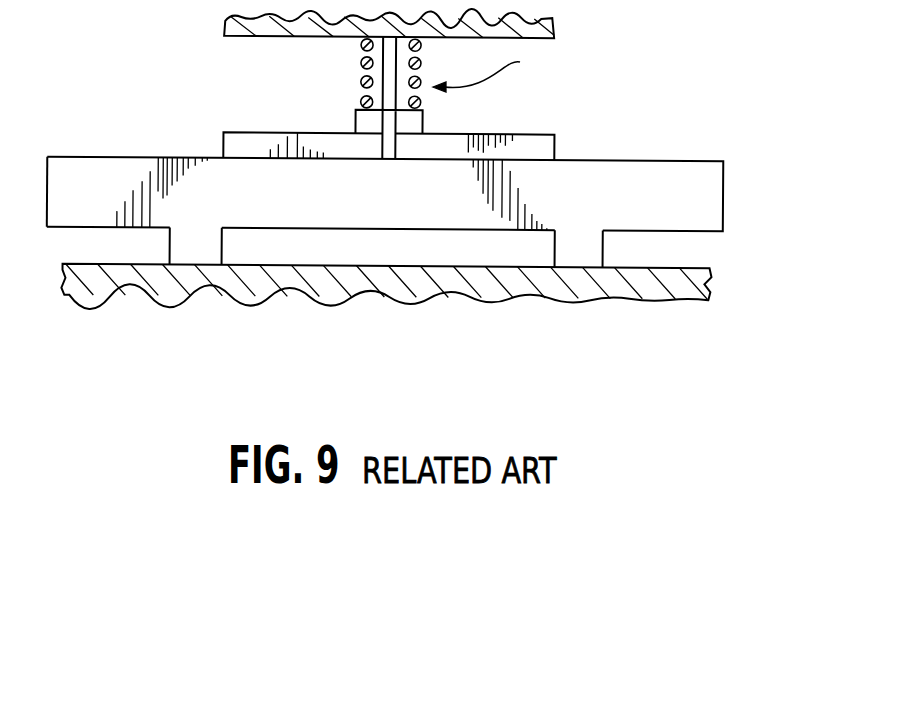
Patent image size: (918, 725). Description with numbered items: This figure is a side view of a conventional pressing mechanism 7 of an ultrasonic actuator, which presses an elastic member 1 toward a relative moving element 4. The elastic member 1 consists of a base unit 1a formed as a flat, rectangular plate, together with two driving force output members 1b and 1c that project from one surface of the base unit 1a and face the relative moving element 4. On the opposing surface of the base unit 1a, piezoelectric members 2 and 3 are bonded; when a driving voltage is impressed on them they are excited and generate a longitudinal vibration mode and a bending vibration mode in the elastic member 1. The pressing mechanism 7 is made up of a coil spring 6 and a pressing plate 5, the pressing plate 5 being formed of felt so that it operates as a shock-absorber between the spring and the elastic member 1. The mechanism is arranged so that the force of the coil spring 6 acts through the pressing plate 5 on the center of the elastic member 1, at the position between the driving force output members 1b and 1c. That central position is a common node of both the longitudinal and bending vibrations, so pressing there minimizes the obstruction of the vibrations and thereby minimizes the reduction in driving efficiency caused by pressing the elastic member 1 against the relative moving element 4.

The elastic member 1 is at (708, 190).
The base unit 1a is at (92, 172).
The driving force output member 1b is at (197, 243).
The driving force output member 1c is at (583, 243).
The piezoelectric member 2 is at (252, 147).
The piezoelectric member 3 is at (527, 143).
The relative moving element 4 is at (700, 288).
The pressing plate 5 is at (412, 118).
The coil spring 6 is at (419, 61).
The pressing mechanism 7 is at (485, 66).